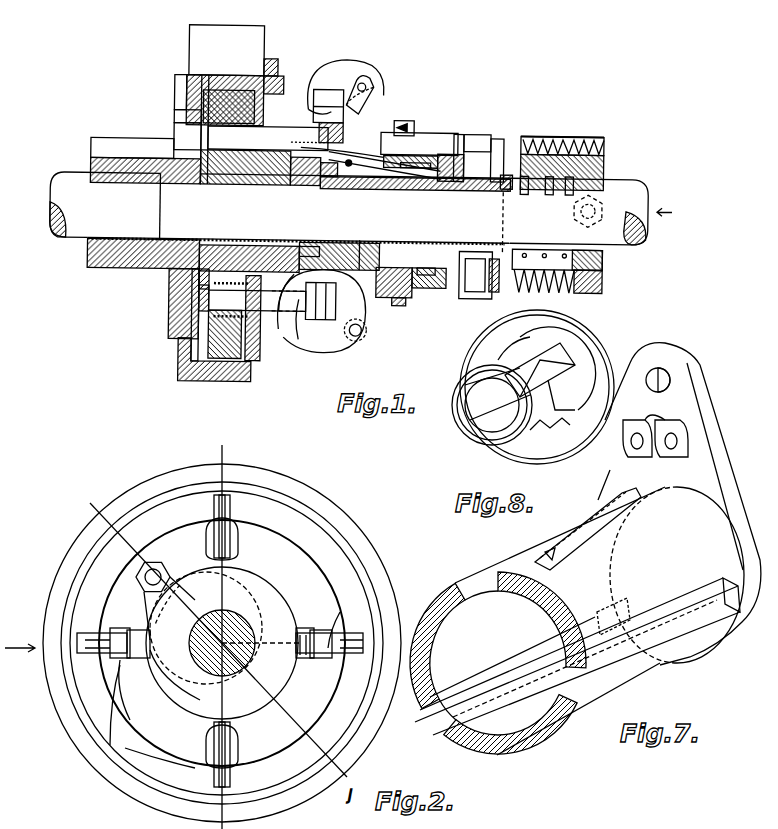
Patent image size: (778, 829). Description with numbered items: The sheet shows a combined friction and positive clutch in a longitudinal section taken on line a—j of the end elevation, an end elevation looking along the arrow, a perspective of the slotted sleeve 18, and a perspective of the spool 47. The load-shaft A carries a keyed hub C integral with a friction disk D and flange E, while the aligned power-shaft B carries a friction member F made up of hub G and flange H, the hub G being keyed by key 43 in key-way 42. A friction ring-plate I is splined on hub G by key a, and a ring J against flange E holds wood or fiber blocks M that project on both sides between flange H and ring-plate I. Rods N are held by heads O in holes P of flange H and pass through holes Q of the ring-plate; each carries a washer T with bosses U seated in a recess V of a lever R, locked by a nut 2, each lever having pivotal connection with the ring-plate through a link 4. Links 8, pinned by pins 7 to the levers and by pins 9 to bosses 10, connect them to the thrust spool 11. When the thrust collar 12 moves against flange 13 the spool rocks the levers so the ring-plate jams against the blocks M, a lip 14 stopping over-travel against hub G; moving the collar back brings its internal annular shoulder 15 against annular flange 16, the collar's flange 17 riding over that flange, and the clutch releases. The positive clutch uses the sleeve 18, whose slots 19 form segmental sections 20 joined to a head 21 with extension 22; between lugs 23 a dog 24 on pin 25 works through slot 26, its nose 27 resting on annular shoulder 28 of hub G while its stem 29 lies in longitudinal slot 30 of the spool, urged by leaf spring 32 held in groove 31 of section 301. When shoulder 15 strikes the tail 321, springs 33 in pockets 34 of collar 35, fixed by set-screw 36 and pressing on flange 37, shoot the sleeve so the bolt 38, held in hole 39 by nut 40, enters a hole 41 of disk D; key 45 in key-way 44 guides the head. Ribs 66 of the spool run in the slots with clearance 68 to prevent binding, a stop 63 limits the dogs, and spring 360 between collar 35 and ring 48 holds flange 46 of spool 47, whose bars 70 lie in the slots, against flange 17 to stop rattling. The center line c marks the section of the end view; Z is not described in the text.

In FIG. 1, the load-shaft A is at (349, 208).
In FIG. 1, the power-shaft B is at (599, 208).
In FIG. 2, the power-shaft B is at (245, 620).
In FIG. 1, the hub C is at (108, 148).
In FIG. 1, the friction disk D is at (190, 86).
In FIG. 1, the flange E is at (225, 75).
In FIG. 2, the flange E is at (312, 508).
In FIG. 1, the friction member F is at (208, 188).
In FIG. 1, the hub G is at (250, 186).
In FIG. 1, the flange H is at (180, 107).
In FIG. 1, the friction ring-plate I is at (272, 60).
In FIG. 2, the friction ring-plate I is at (325, 545).
In FIG. 1, the ring J is at (182, 363).
In FIG. 1, the blocks M is at (232, 92).
In FIG. 1, the rods N is at (272, 65).
In FIG. 1, the heads O is at (178, 290).
In FIG. 1, the holes P is at (175, 308).
In FIG. 1, the holes Q is at (270, 330).
In FIG. 1, the levers R is at (328, 70).
In FIG. 2, the levers R is at (234, 684).
In FIG. 1, the washer T is at (318, 100).
In FIG. 2, the washer T is at (240, 540).
In FIG. 1, the bosses U is at (321, 311).
In FIG. 1, the recess V is at (300, 327).
In FIG. 1, the link Z is at (354, 92).
In FIG. 1, the key a is at (303, 294).
In FIG. 2, the key a is at (214, 632).
In FIG. 2, the section line c is at (221, 629).
In FIG. 2, the nuts 2 is at (248, 548).
In FIG. 1, the link 4 is at (268, 128).
In FIG. 1, the pins 7 is at (364, 333).
In FIG. 1, the links 8 is at (360, 296).
In FIG. 2, the links 8 is at (232, 515).
In FIG. 1, the pins 9 is at (362, 300).
In FIG. 1, the bosses 10 is at (340, 340).
In FIG. 1, the thrust spool 11 is at (359, 247).
In FIG. 1, the thrust collar 12 is at (470, 92).
In FIG. 2, the thrust collar 12 is at (150, 650).
In FIG. 1, the flange 13 is at (404, 305).
In FIG. 1, the lip 14 is at (324, 325).
In FIG. 1, the internal annular shoulder 15 is at (445, 290).
In FIG. 1, the annular flange 16 is at (465, 297).
In FIG. 1, the flange 17 is at (432, 290).
In FIG. 7, the sleeve 18 is at (677, 575).
In FIG. 7, the slots 19 is at (448, 700).
In FIG. 7, the segmental sections 20 is at (545, 690).
In FIG. 1, the head 21 is at (330, 350).
In FIG. 7, the head 21 is at (722, 478).
In FIG. 2, the head 21 is at (270, 600).
In FIG. 1, the extension 22 is at (372, 98).
In FIG. 7, the extension 22 is at (702, 450).
In FIG. 2, the extension 22 is at (232, 585).
In FIG. 7, the lugs 23 is at (682, 432).
In FIG. 1, the dog 24 is at (418, 200).
In FIG. 1, the pin 25 is at (352, 177).
In FIG. 7, the slot 26 is at (680, 415).
In FIG. 1, the nose 27 is at (300, 178).
In FIG. 1, the annular shoulder 28 is at (268, 185).
In FIG. 1, the stem 29 is at (440, 170).
In FIG. 1, the longitudinal slot 30 is at (478, 190).
In FIG. 7, the longitudinal groove 31 is at (555, 548).
In FIG. 1, the leaf spring 32 is at (386, 205).
In FIG. 1, the springs 33 is at (560, 135).
In FIG. 1, the pockets 34 is at (598, 290).
In FIG. 1, the collar 35 is at (605, 148).
In FIG. 2, the collar 35 is at (261, 659).
In FIG. 1, the set-screw 36 is at (604, 208).
In FIG. 2, the set-screw 36 is at (315, 640).
In FIG. 1, the flange 37 is at (528, 137).
In FIG. 2, the bolt 38 is at (172, 572).
In FIG. 1, the hole 39 is at (268, 138).
In FIG. 7, the hole 39 is at (668, 378).
In FIG. 1, the nut 40 is at (345, 128).
In FIG. 2, the nut 40 is at (165, 586).
In FIG. 1, the holes 41 is at (183, 137).
In FIG. 1, the key-way 42 is at (275, 243).
In FIG. 1, the key 43 is at (236, 242).
In FIG. 7, the key-way 44 is at (630, 614).
In FIG. 1, the key 45 is at (330, 205).
In FIG. 1, the flange 46 is at (459, 133).
In FIG. 8, the flange 46 is at (565, 360).
In FIG. 1, the spool 47 is at (476, 284).
In FIG. 8, the spool 47 is at (567, 340).
In FIG. 1, the ring 48 is at (496, 137).
In FIG. 8, the ring 48 is at (462, 448).
In FIG. 1, the stop 63 is at (338, 180).
In FIG. 1, the ribs 66 is at (412, 297).
In FIG. 1, the clearance 68 is at (496, 188).
In FIG. 1, the bars 70 is at (493, 292).
In FIG. 8, the bars 70 is at (545, 428).
In FIG. 1, the segmental section 301 is at (448, 188).
In FIG. 7, the segmental section 301 is at (552, 563).
In FIG. 1, the tail 321 is at (485, 135).
In FIG. 1, the coiled spring 360 is at (605, 160).